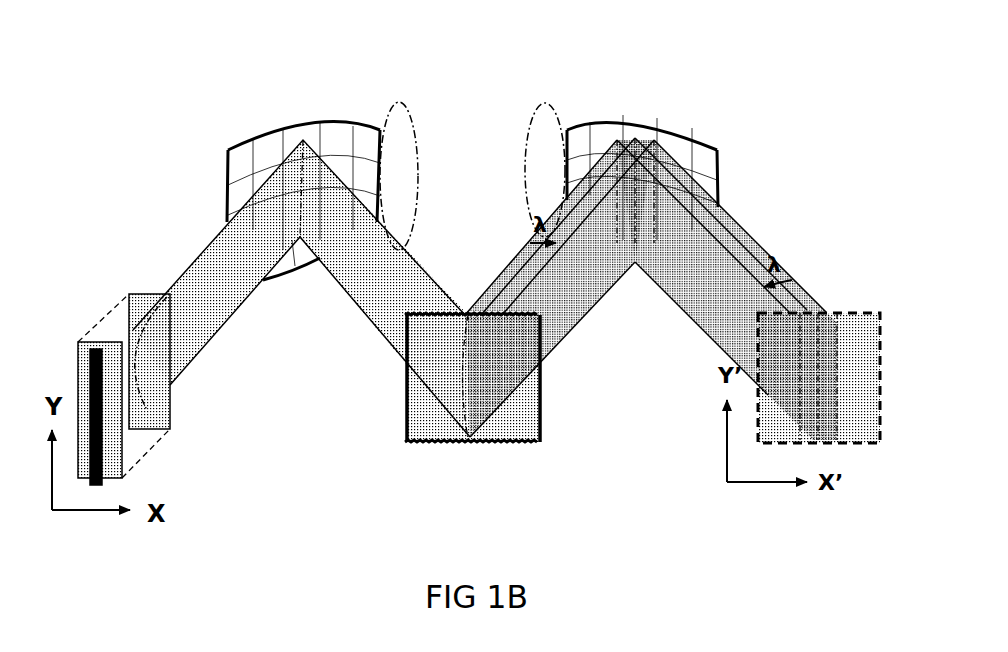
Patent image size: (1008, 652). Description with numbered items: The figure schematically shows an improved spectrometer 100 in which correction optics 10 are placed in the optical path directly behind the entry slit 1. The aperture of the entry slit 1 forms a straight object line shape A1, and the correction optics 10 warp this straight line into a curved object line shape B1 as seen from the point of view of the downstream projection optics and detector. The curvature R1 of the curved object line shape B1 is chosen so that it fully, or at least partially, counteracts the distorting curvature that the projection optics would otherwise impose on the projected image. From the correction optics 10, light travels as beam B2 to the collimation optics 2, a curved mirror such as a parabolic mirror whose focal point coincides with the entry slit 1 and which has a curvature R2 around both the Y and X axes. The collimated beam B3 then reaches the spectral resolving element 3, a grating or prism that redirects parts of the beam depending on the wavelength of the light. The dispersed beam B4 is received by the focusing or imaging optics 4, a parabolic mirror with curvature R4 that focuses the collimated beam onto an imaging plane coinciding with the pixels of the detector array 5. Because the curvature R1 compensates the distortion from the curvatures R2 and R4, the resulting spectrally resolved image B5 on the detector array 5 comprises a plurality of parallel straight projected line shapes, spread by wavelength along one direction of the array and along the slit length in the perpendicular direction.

The spectrometer 100 is at (128, 130).
The entry slit 1 is at (96, 341).
The straight object line shape A1 is at (111, 431).
The correction optics 10 is at (114, 298).
The curvature of the curved object line shape R1 is at (144, 339).
The curved object line shape B1 is at (155, 382).
The collimation optics 2 is at (310, 115).
The beam at the collimation optics B2 is at (304, 219).
The curvature of the collimation optics R2 is at (375, 171).
The spectral resolving element 3 is at (467, 308).
The beam at the spectral resolving element B3 is at (475, 395).
The focusing or imaging optics 4 is at (632, 115).
The beam at the focusing optics B4 is at (634, 212).
The curvature of the focusing optics R4 is at (565, 171).
The detector array 5 is at (825, 305).
The corrected image B5 is at (815, 390).